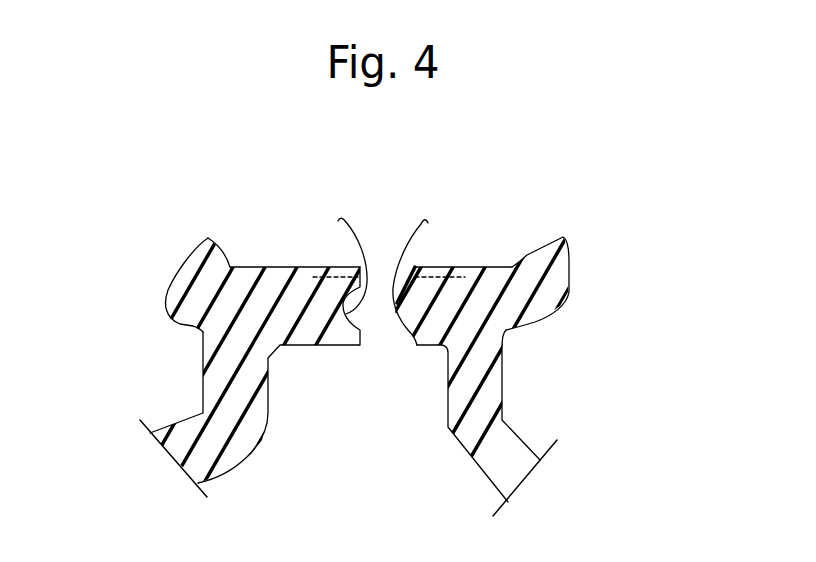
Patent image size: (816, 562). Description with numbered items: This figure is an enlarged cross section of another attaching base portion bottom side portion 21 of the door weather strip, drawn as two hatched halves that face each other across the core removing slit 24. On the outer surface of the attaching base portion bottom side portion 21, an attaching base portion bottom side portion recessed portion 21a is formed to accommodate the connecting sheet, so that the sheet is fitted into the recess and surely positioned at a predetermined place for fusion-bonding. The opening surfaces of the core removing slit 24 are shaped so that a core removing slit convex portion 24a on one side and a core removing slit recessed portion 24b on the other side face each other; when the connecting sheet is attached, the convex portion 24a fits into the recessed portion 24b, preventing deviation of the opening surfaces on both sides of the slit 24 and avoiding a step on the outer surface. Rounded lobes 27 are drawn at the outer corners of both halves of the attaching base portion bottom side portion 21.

The attaching base portion bottom side portion 21 is at (327, 310).
The attaching base portion bottom side portion recessed portion 21a is at (337, 267).
The core removing slit 24 is at (382, 280).
The core removing slit convex portion 24a is at (428, 223).
The core removing slit recessed portion 24b is at (338, 221).
The protrusion 27 is at (208, 238).